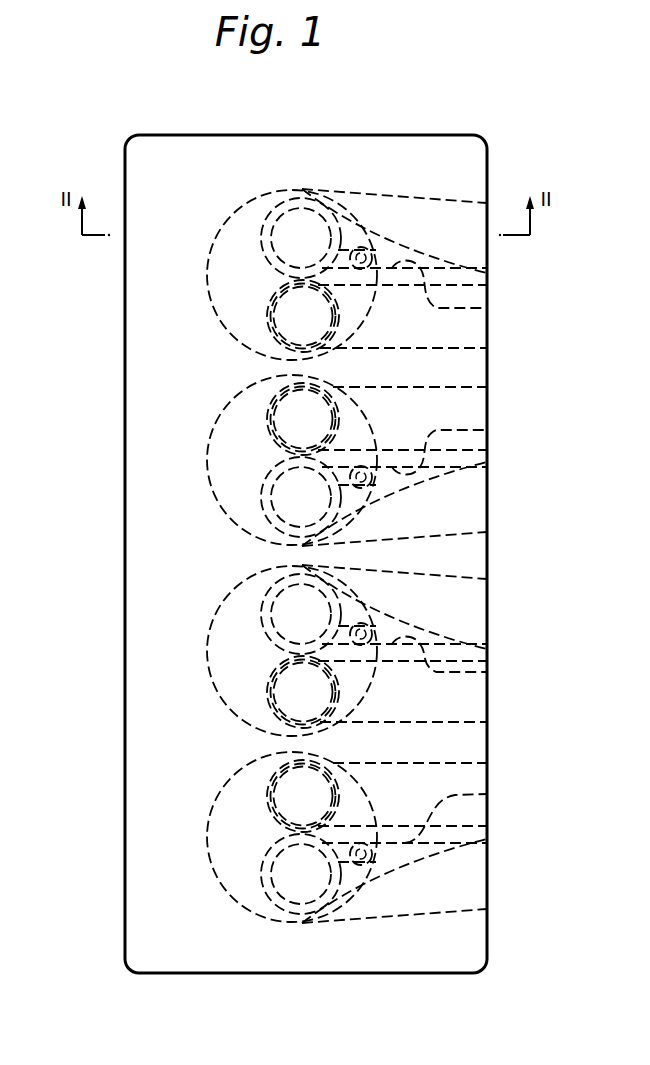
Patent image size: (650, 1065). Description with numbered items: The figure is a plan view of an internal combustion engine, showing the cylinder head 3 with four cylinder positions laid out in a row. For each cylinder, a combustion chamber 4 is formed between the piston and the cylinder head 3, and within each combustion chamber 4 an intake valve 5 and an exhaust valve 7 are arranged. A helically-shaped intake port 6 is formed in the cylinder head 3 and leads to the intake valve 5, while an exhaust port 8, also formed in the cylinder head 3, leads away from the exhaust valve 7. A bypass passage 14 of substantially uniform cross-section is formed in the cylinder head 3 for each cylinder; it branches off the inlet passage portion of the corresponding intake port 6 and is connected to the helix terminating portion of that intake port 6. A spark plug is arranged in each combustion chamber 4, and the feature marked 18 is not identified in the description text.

The cylinder head 3 is at (165, 147).
The combustion chamber 4 is at (205, 306).
The intake valve 5 is at (277, 230).
The helically-shaped intake port 6 is at (430, 200).
The exhaust valve 7 is at (283, 328).
The exhaust port 8 is at (392, 348).
The bypass passage 14 is at (493, 307).
The spark plug 18 is at (376, 248).